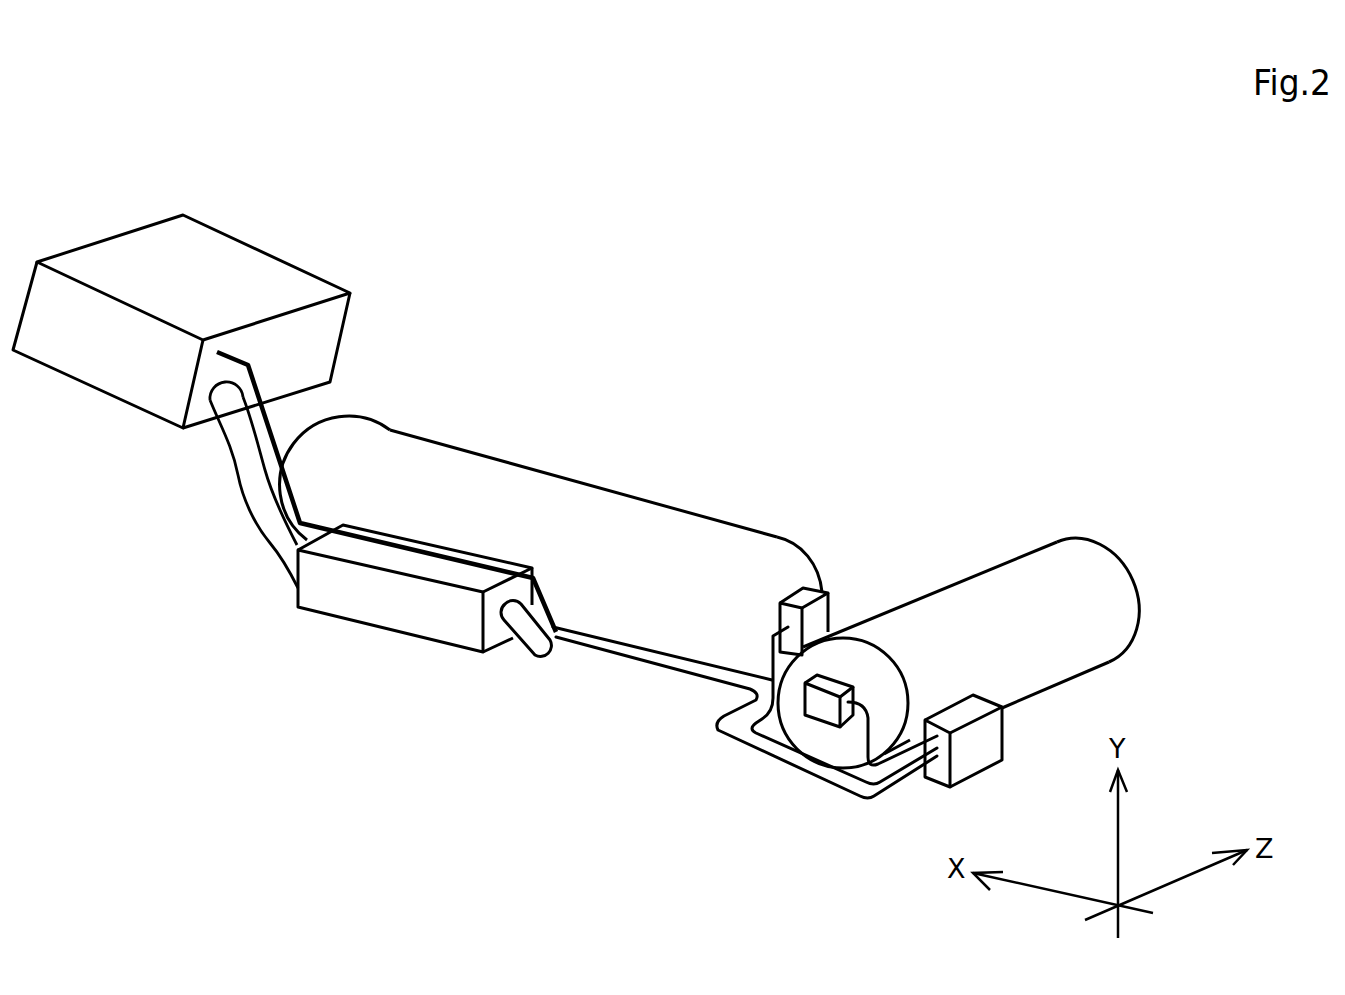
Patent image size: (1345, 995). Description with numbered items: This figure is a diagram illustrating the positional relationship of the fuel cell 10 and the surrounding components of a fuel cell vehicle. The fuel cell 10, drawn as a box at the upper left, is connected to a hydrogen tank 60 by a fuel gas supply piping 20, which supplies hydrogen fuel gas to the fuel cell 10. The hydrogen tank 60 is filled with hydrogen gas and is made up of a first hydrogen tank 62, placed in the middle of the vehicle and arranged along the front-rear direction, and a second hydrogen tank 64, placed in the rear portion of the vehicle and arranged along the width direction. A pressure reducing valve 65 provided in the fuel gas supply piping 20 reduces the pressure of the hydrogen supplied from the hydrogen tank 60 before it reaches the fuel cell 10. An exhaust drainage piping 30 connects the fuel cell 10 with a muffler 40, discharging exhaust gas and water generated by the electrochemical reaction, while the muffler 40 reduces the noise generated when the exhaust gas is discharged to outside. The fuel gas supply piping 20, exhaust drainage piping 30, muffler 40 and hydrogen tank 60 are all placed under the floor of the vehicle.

The fuel cell 10 is at (245, 262).
The fuel gas supply piping 20 is at (772, 633).
The exhaust drainage piping 30 is at (278, 558).
The muffler 40 is at (417, 623).
The hydrogen tank 60 is at (893, 403).
The first hydrogen tank 62 is at (750, 543).
The second hydrogen tank 64 is at (908, 625).
The pressure reducing valve 65 is at (978, 760).